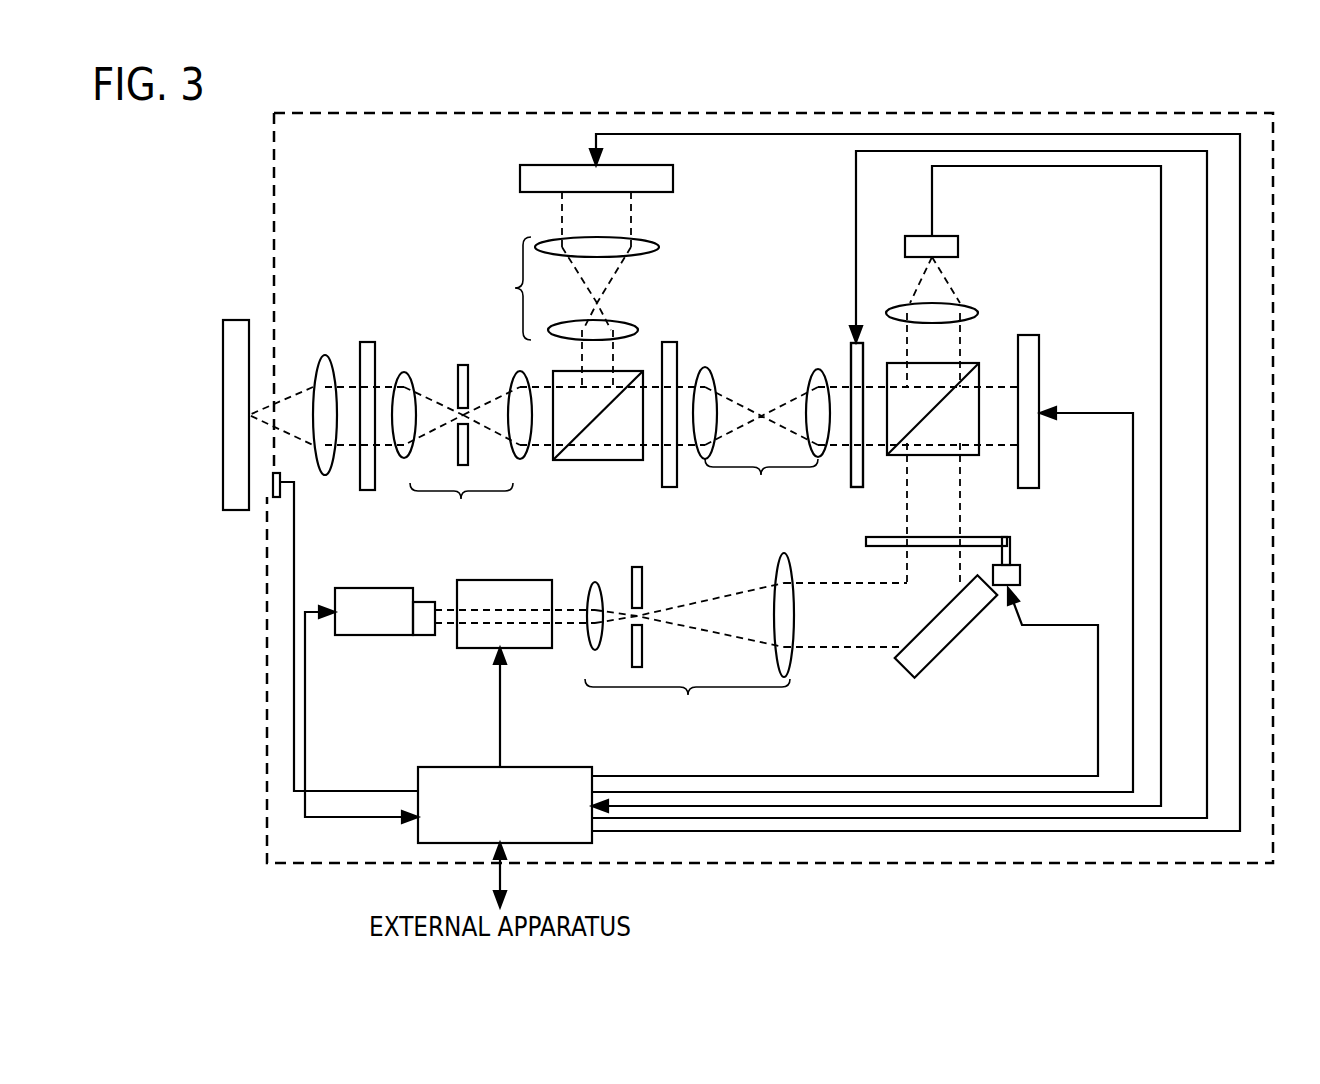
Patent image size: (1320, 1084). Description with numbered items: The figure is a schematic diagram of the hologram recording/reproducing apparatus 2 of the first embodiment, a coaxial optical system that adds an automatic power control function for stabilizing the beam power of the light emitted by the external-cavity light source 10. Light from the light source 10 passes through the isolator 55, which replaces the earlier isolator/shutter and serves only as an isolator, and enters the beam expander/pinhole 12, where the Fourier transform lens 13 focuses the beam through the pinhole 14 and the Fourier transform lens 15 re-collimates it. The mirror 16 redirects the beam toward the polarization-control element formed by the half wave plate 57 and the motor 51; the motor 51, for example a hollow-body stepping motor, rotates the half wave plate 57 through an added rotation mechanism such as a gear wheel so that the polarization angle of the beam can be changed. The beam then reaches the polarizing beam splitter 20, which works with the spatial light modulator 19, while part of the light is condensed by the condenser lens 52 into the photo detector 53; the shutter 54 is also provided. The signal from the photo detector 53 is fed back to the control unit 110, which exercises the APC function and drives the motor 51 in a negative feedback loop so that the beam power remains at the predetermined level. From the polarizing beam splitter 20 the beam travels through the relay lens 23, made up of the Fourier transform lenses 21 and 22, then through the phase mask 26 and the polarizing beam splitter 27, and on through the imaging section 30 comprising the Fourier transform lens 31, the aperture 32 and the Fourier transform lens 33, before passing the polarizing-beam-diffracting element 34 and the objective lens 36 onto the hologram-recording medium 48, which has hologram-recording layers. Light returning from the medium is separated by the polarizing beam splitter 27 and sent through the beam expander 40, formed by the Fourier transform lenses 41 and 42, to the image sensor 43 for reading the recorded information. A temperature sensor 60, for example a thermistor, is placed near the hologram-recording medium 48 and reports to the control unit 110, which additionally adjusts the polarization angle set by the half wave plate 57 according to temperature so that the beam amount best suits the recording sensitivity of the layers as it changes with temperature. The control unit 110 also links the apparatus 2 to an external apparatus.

The hologram recording/reproducing apparatus 2 is at (1273, 215).
The light source 10 is at (378, 637).
The beam expander/pinhole 12 is at (717, 635).
The Fourier transform lens 13 is at (598, 583).
The pinhole 14 is at (643, 578).
The Fourier transform lens 15 is at (795, 610).
The mirror 16 is at (928, 655).
The spatial light modulator 19 is at (1040, 440).
The polarizing beam splitter 20 is at (978, 365).
The Fourier transform lens 21 is at (851, 360).
The Fourier transform lens 22 is at (708, 367).
The relay lens 23 is at (761, 420).
The phase mask 26 is at (672, 342).
The polarizing beam splitter 27 is at (580, 462).
The imaging optical system 30 is at (462, 427).
The Fourier transform lens 31 is at (517, 458).
The aperture 32 is at (460, 363).
The Fourier transform lens 33 is at (410, 457).
The polarizing-beam-diffracting element 34 is at (360, 482).
The objective lens 36 is at (323, 357).
The beam expander 40 is at (515, 288).
The Fourier transform lens 41 is at (615, 322).
The Fourier transform lens 42 is at (655, 245).
The image sensor 43 is at (673, 178).
The hologram-recording medium 48 is at (235, 512).
The motor 51 is at (1020, 573).
The condenser lens 52 is at (968, 305).
The photo detector 53 is at (955, 236).
The shutter 54 is at (857, 489).
The isolator 55 is at (490, 580).
The half wave plate 57 is at (960, 537).
The temperature sensor 60 is at (277, 473).
The control unit 110 is at (525, 767).